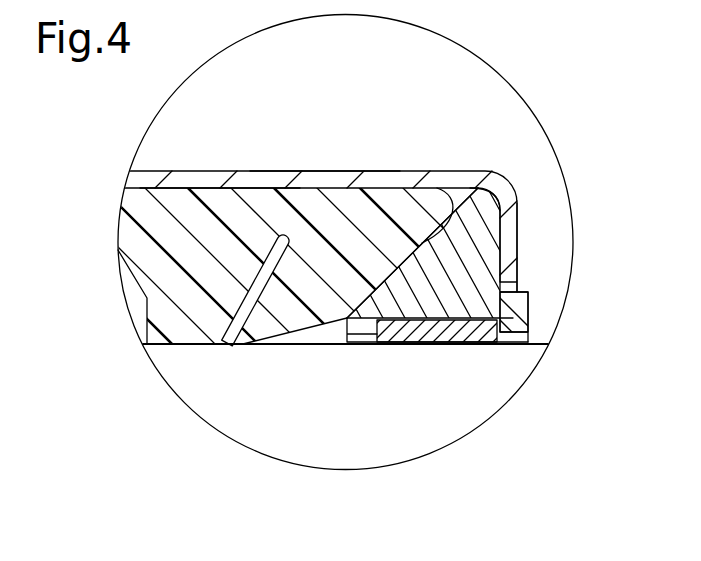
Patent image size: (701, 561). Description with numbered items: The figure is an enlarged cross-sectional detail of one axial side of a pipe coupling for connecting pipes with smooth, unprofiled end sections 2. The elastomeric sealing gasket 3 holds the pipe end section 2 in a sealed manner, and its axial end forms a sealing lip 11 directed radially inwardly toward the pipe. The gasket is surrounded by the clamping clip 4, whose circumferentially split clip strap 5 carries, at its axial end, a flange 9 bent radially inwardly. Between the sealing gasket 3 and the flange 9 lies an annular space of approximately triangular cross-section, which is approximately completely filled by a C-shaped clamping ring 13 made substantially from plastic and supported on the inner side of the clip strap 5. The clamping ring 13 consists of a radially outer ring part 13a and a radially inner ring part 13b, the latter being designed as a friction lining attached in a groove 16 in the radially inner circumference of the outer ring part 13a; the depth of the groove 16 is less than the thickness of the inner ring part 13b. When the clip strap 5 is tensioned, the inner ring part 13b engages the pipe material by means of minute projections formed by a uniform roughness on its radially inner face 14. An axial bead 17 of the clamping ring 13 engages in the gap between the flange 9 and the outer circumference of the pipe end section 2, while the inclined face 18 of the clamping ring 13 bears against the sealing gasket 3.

The end section 2 is at (497, 384).
The sealing gasket 3 is at (213, 188).
The clamping clip 4 is at (381, 171).
The clip strap 5 is at (315, 171).
The flange 9 is at (518, 244).
The sealing lip 11 is at (199, 335).
The clamping ring 13 is at (503, 232).
The radially outer ring part 13a is at (472, 282).
The radially inner ring part 13b is at (505, 328).
The radially inner face 14 is at (455, 344).
The groove 16 is at (417, 320).
The axial bead 17 is at (528, 308).
The face 18 is at (427, 243).